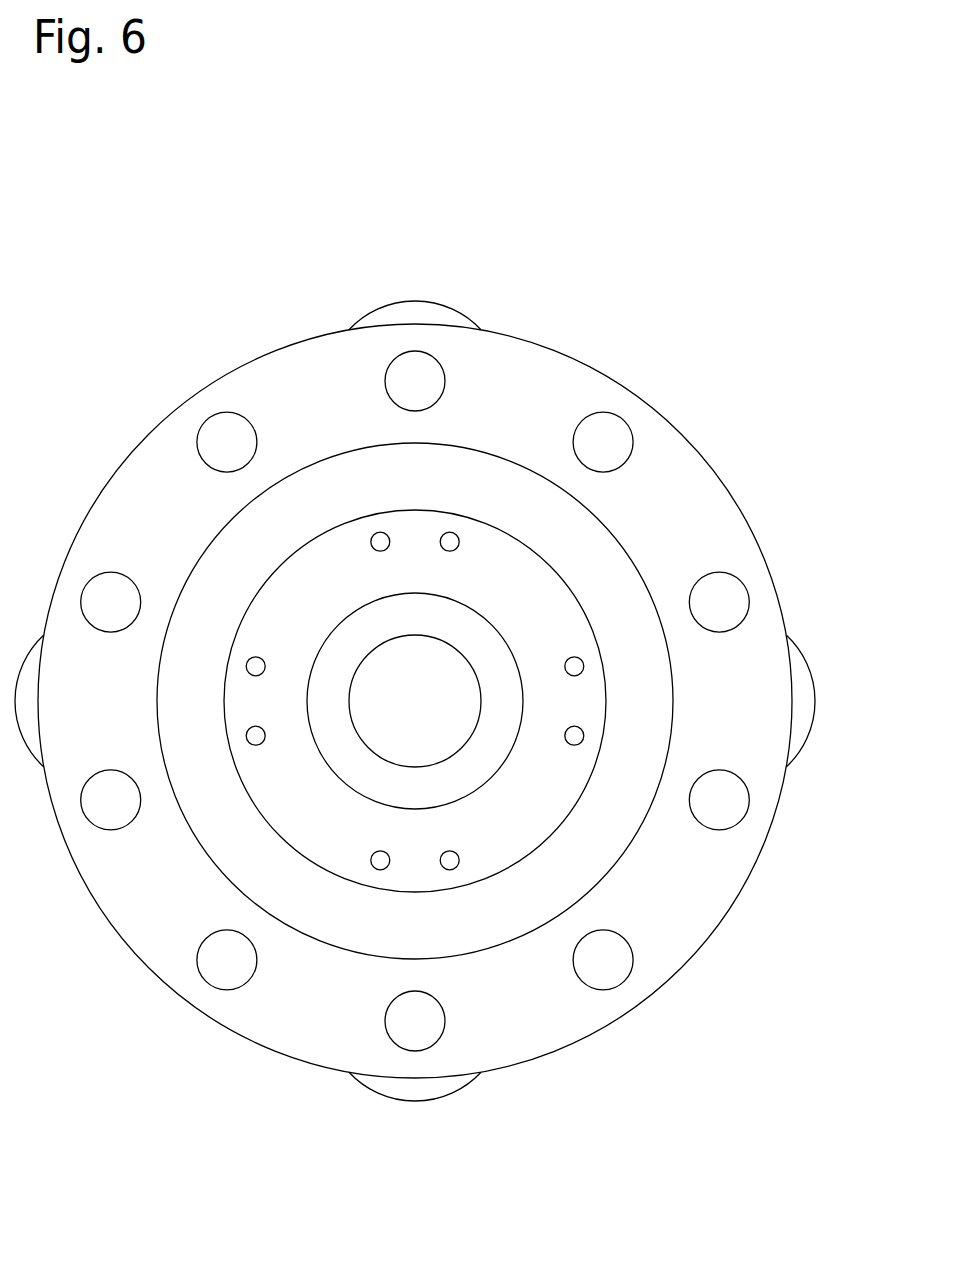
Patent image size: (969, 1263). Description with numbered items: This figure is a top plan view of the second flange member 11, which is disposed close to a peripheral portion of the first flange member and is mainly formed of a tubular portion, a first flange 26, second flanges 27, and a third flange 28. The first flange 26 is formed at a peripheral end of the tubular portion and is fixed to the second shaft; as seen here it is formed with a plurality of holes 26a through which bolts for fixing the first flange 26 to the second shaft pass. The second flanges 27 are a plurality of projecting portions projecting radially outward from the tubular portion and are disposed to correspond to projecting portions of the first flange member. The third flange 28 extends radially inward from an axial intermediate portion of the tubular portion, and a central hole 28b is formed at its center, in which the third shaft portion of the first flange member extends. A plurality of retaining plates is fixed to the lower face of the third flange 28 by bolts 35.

The second flange member 11 is at (642, 264).
The first flange 26 is at (513, 360).
The holes 26a is at (388, 370).
The second flanges 27 is at (432, 314).
The third flange 28 is at (300, 560).
The central hole 28b is at (430, 652).
The bolts 35 is at (578, 727).